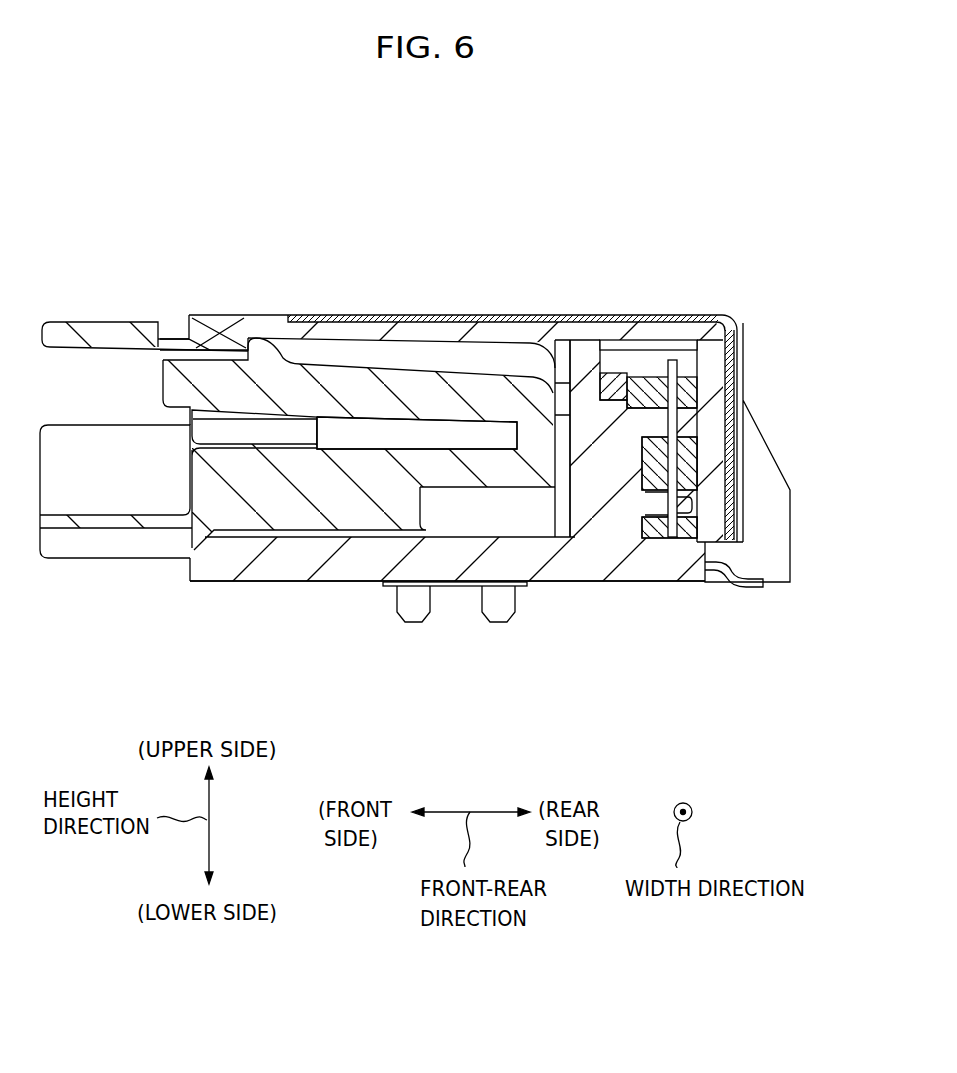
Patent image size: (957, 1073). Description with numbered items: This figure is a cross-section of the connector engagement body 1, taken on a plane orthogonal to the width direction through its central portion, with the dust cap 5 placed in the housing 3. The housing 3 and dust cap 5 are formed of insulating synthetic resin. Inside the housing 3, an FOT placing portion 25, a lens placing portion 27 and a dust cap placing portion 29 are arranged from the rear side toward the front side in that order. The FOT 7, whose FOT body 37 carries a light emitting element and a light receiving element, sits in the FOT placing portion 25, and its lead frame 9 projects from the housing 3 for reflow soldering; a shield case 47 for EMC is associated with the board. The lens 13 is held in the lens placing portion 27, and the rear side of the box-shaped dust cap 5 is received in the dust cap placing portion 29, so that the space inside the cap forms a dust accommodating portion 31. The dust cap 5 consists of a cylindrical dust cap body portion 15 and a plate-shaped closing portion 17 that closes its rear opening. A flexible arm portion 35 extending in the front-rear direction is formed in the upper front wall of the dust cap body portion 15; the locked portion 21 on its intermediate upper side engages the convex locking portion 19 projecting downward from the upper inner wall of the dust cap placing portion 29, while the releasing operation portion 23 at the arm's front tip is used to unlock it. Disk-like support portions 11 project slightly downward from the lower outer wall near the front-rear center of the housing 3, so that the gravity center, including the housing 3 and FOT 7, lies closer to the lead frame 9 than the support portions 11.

The connector engagement body 1 is at (263, 310).
The housing 3 is at (327, 583).
The dust cap 5 is at (203, 520).
The FOT 7 is at (697, 450).
The lead frame 9 is at (747, 588).
The support portions 11 is at (453, 588).
The lens 13 is at (603, 495).
The dust cap body portion 15 is at (287, 520).
The closing portion 17 is at (537, 407).
The locking portion 19 is at (237, 343).
The locked portion 21 is at (268, 358).
The releasing operation portion 23 is at (97, 320).
The FOT placing portion 25 is at (693, 370).
The lens placing portion 27 is at (607, 437).
The dust cap placing portion 29 is at (425, 360).
The dust accommodating portion 31 is at (477, 440).
The arm portion 35 is at (183, 345).
The FOT body 37 is at (650, 530).
The shield case 47 is at (507, 320).